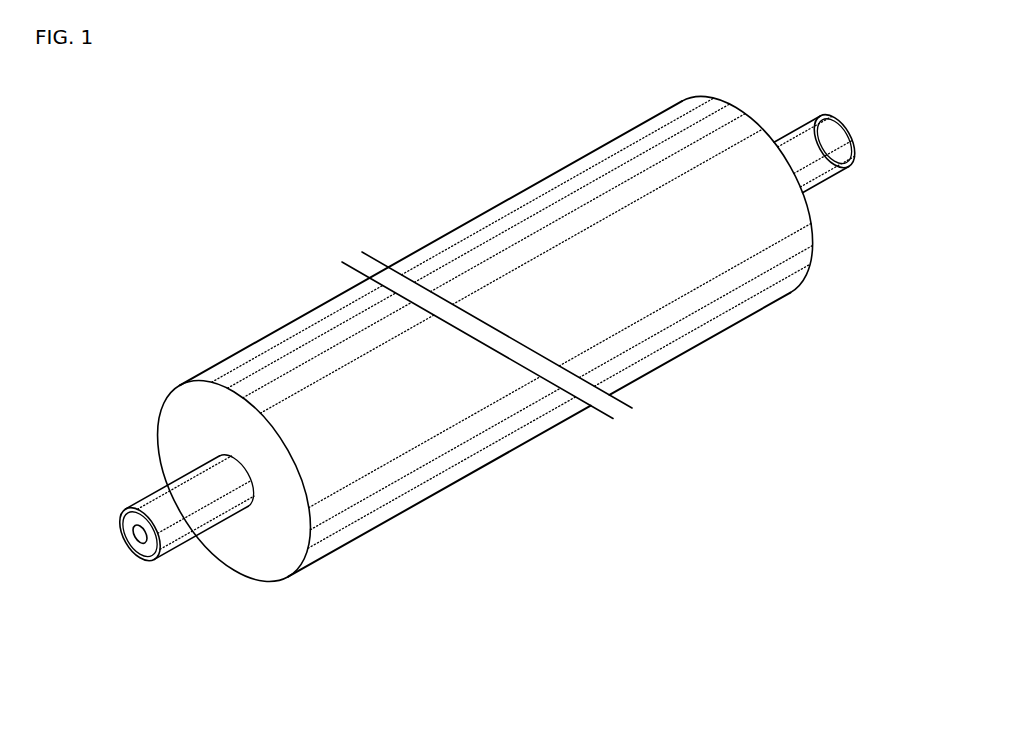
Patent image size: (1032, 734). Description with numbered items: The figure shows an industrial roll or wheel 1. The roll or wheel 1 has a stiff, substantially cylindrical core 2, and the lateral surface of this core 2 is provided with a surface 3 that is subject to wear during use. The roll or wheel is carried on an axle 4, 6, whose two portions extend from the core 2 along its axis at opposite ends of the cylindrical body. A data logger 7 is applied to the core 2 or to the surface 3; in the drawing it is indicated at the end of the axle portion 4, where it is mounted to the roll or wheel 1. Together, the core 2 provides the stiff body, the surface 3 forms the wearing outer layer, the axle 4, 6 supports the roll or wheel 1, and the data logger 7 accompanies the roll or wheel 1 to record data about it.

The roll or wheel 1 is at (147, 222).
The core 2 is at (187, 420).
The surface 3 is at (500, 200).
The axle 4 is at (140, 498).
The axle 6 is at (826, 116).
The data logger 7 is at (136, 536).